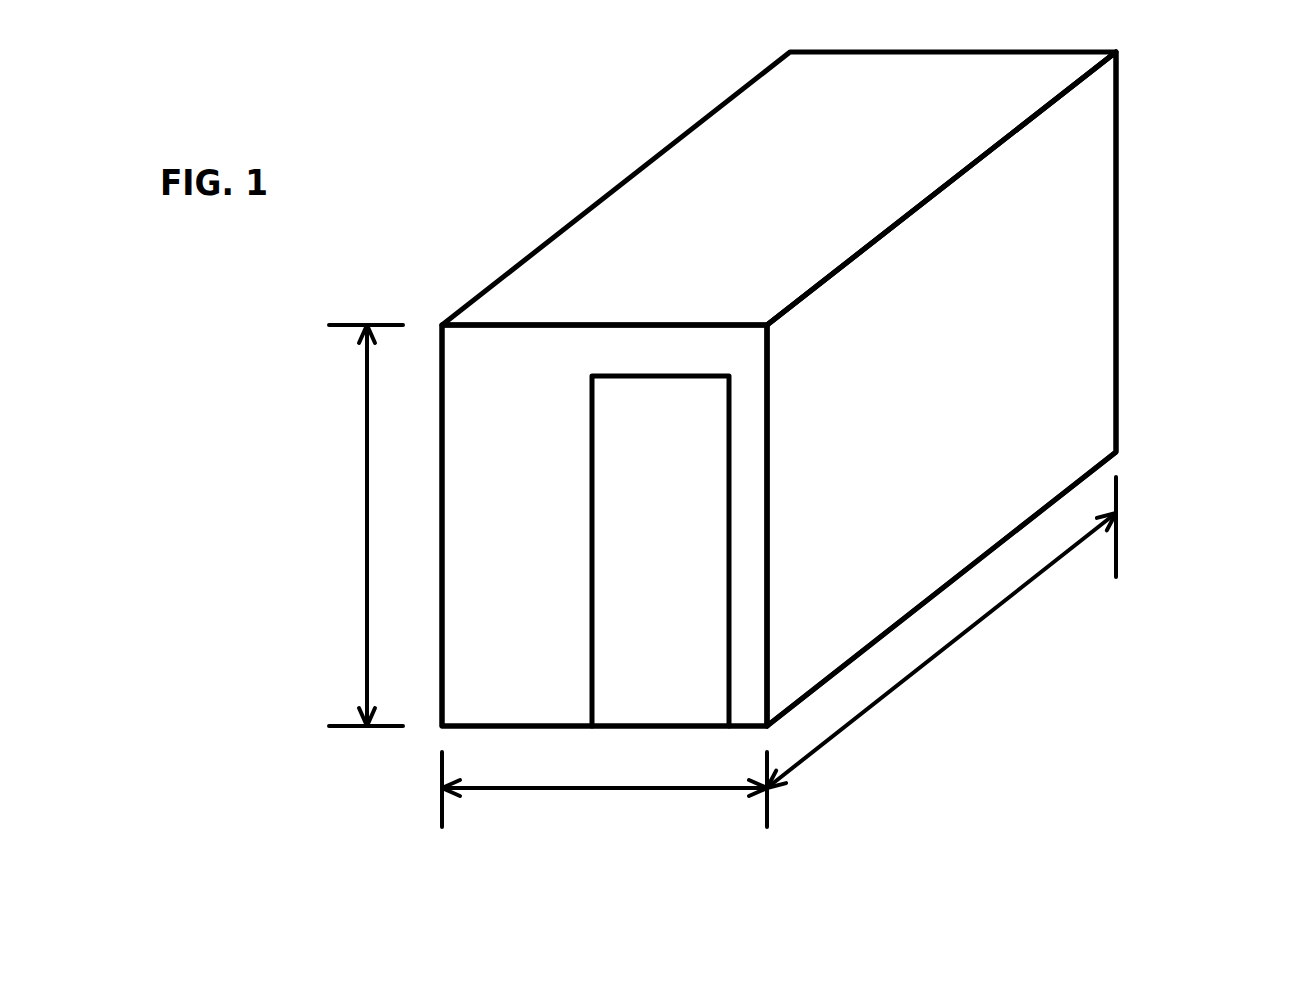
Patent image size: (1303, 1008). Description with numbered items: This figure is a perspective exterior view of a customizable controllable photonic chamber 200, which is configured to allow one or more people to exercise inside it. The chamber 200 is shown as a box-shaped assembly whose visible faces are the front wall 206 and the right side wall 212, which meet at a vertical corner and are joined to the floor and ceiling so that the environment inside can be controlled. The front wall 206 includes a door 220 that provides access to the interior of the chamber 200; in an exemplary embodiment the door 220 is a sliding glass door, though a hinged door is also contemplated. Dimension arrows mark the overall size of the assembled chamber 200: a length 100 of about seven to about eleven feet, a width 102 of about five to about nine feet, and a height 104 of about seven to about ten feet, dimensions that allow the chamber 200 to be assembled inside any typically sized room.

The photonic chamber 200 is at (579, 162).
The right side wall 212 is at (1082, 297).
The front wall 206 is at (478, 677).
The door 220 is at (660, 708).
The height 104 is at (328, 490).
The width 102 is at (615, 810).
The length 100 is at (903, 702).